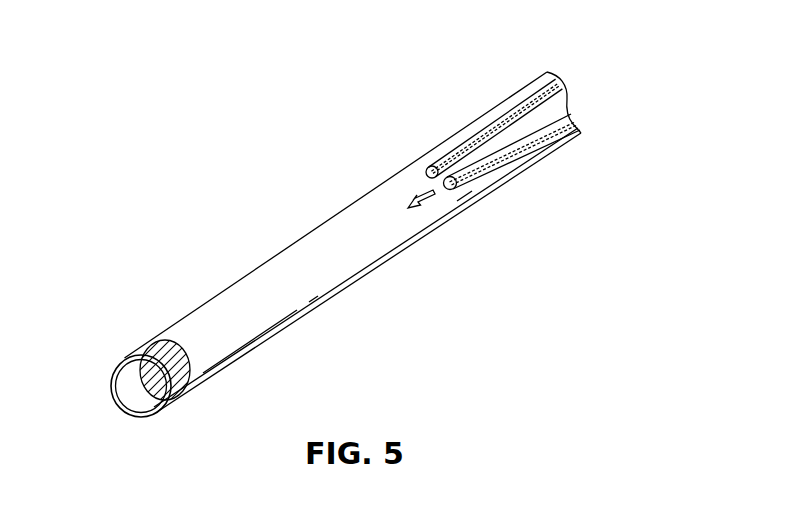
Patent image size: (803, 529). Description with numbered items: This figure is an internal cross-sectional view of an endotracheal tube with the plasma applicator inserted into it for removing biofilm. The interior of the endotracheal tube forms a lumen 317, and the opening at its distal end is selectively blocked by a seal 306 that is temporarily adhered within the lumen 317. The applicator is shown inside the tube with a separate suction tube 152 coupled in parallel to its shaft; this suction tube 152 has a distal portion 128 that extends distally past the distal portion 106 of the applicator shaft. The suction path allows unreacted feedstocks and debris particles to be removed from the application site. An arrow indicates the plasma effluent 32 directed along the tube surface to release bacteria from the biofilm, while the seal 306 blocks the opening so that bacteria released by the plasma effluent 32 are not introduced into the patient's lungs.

The lumen 317 is at (199, 314).
The seal 306 is at (168, 342).
The separate tube 152 is at (531, 116).
The distal portion 128 is at (457, 151).
The distal portion 106 is at (512, 147).
The plasma effluent 32 is at (422, 189).